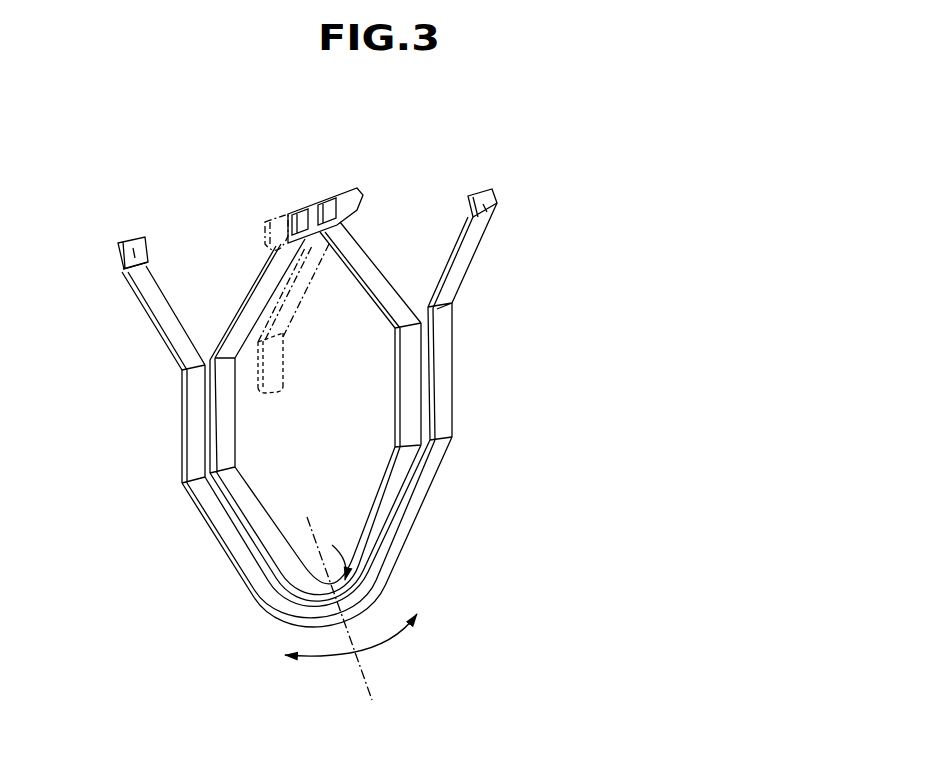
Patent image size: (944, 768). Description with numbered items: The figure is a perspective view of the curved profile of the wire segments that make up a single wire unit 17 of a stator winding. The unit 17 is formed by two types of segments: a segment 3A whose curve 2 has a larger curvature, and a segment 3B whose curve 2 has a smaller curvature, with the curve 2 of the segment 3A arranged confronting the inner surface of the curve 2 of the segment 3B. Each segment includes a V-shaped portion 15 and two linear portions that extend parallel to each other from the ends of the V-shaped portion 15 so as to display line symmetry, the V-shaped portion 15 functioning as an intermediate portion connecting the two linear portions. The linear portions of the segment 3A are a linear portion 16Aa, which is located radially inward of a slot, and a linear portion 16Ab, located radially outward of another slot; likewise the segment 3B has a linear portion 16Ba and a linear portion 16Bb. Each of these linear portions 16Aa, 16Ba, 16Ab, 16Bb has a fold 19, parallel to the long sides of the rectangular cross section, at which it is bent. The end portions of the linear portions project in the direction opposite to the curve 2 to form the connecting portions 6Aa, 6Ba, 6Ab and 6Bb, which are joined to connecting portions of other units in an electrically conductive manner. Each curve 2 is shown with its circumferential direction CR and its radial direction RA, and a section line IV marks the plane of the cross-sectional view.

The wire unit 17 is at (590, 158).
The segment 3A is at (254, 478).
The segment 3B is at (462, 346).
The connecting portion 6Aa is at (325, 200).
The connecting portion 6Ab is at (300, 215).
The connecting portion 6Ba is at (497, 196).
The connecting portion 6Bb is at (126, 242).
The linear portion 16Aa is at (410, 423).
The linear portion 16Ab is at (227, 443).
The linear portion 16Ba is at (440, 378).
The linear portion 16Bb is at (198, 408).
The fold 19 is at (132, 280).
The V-shaped portion 15 is at (258, 528).
The curve 2 is at (300, 602).
The section line IV- IV is at (322, 540).
The radial direction RA is at (350, 556).
The circumferential direction CR is at (374, 625).